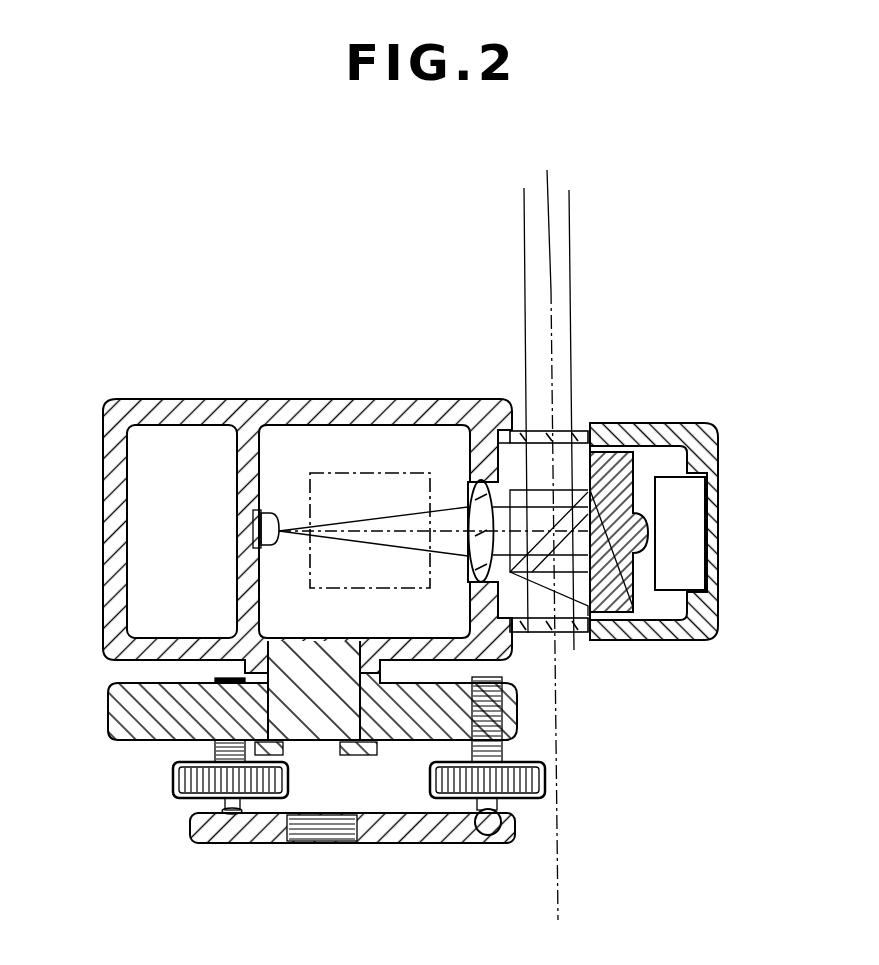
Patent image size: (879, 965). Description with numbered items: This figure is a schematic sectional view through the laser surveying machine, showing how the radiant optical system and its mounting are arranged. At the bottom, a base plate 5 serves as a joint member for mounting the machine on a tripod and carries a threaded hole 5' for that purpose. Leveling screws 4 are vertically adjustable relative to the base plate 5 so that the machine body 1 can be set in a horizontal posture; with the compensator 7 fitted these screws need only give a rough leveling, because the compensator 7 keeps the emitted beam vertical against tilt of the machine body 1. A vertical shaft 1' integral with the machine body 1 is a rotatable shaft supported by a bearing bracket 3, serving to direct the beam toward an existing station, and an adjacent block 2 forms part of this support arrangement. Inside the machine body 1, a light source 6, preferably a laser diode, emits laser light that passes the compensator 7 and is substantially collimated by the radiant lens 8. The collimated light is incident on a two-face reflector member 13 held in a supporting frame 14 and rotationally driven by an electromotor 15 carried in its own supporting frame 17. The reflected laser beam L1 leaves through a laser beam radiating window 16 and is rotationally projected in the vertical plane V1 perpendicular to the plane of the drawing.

The machine body 1 is at (307, 480).
The vertical shaft 1' is at (333, 781).
The right support block 2 is at (378, 752).
The bearing bracket 3 is at (108, 697).
The leveling screws 4 is at (173, 782).
The base plate 5 is at (303, 830).
The threaded hole 5' is at (322, 868).
The light source 6 is at (271, 512).
The compensator 7 is at (354, 473).
The radiant lens 8 is at (468, 505).
The two-face reflector member 13 is at (608, 578).
The supporting frame for the two-face reflector member 14 is at (625, 468).
The electromotor 15 is at (700, 505).
The laser beam radiating window 16 is at (578, 635).
The supporting frame for the electromotor 17 is at (705, 428).
The plane of rotational projection V1 is at (549, 180).
The laser beam L1 is at (563, 256).